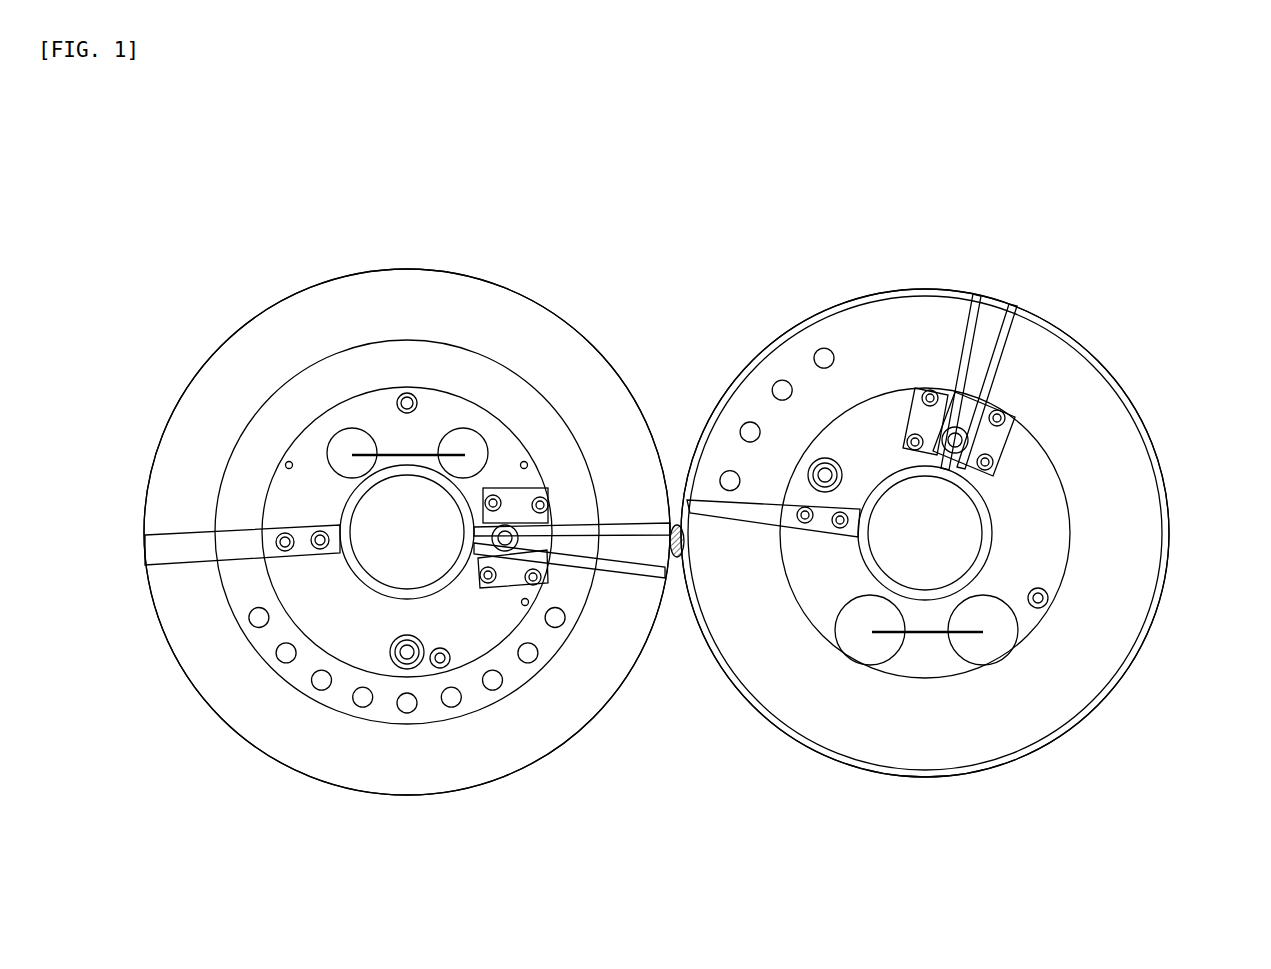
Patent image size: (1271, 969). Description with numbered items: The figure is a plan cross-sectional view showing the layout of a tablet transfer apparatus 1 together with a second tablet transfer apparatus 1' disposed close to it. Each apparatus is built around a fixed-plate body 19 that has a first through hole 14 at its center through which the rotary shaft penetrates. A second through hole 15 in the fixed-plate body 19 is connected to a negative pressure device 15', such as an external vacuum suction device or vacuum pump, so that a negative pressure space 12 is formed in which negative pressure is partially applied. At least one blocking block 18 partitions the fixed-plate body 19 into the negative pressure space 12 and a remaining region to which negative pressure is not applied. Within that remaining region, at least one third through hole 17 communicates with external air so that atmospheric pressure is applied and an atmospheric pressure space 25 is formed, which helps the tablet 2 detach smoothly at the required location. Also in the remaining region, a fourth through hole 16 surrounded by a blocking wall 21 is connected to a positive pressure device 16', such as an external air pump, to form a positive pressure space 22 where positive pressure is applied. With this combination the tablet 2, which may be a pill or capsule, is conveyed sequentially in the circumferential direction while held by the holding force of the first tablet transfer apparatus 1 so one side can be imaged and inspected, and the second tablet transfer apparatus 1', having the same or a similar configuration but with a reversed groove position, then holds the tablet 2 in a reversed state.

The tablet transfer apparatus 1 is at (407, 485).
The second tablet transfer apparatus 1' is at (928, 477).
The tablet 2 is at (678, 524).
The negative pressure space 12 is at (226, 435).
The first through hole 14 is at (422, 548).
The second through hole 15 is at (651, 532).
The negative pressure device 15' is at (646, 539).
The fourth through hole 16 is at (842, 591).
The positive pressure device 16' is at (865, 372).
The third through hole 17 is at (407, 714).
The blocking block 18 is at (180, 548).
The fixed-plate body 19 is at (432, 269).
The blocking wall 21 is at (626, 523).
The positive pressure space 22 is at (616, 572).
The atmospheric pressure space 25 is at (290, 688).